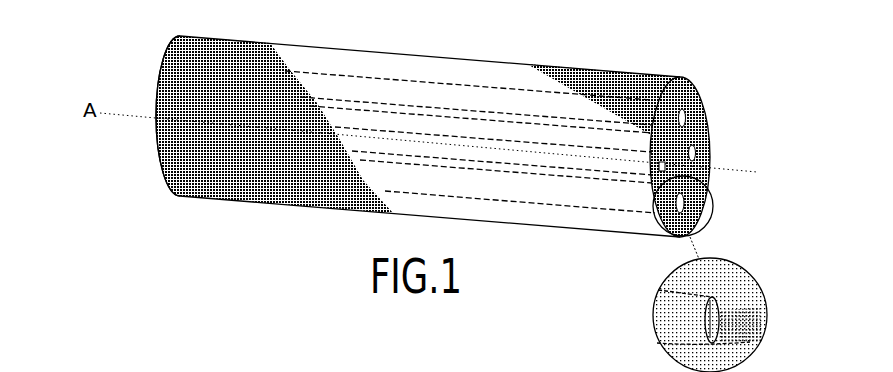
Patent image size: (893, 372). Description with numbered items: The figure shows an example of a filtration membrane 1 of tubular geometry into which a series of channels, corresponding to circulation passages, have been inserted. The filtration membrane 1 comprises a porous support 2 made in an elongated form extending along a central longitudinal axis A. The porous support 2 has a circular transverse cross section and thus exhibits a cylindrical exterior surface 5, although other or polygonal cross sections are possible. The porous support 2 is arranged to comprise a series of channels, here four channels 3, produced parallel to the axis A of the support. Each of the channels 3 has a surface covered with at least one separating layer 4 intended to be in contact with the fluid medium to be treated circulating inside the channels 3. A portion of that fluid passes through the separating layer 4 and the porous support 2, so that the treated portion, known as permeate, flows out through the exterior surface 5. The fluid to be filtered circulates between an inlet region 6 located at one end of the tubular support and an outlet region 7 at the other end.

The filtration membrane 1 is at (725, 42).
The porous support 2 is at (239, 41).
The channels 3 is at (713, 206).
The separating layer 4 is at (705, 152).
The cylindrical exterior surface 5 is at (492, 62).
The inlet region 6 is at (155, 75).
The outlet region 7 is at (700, 98).